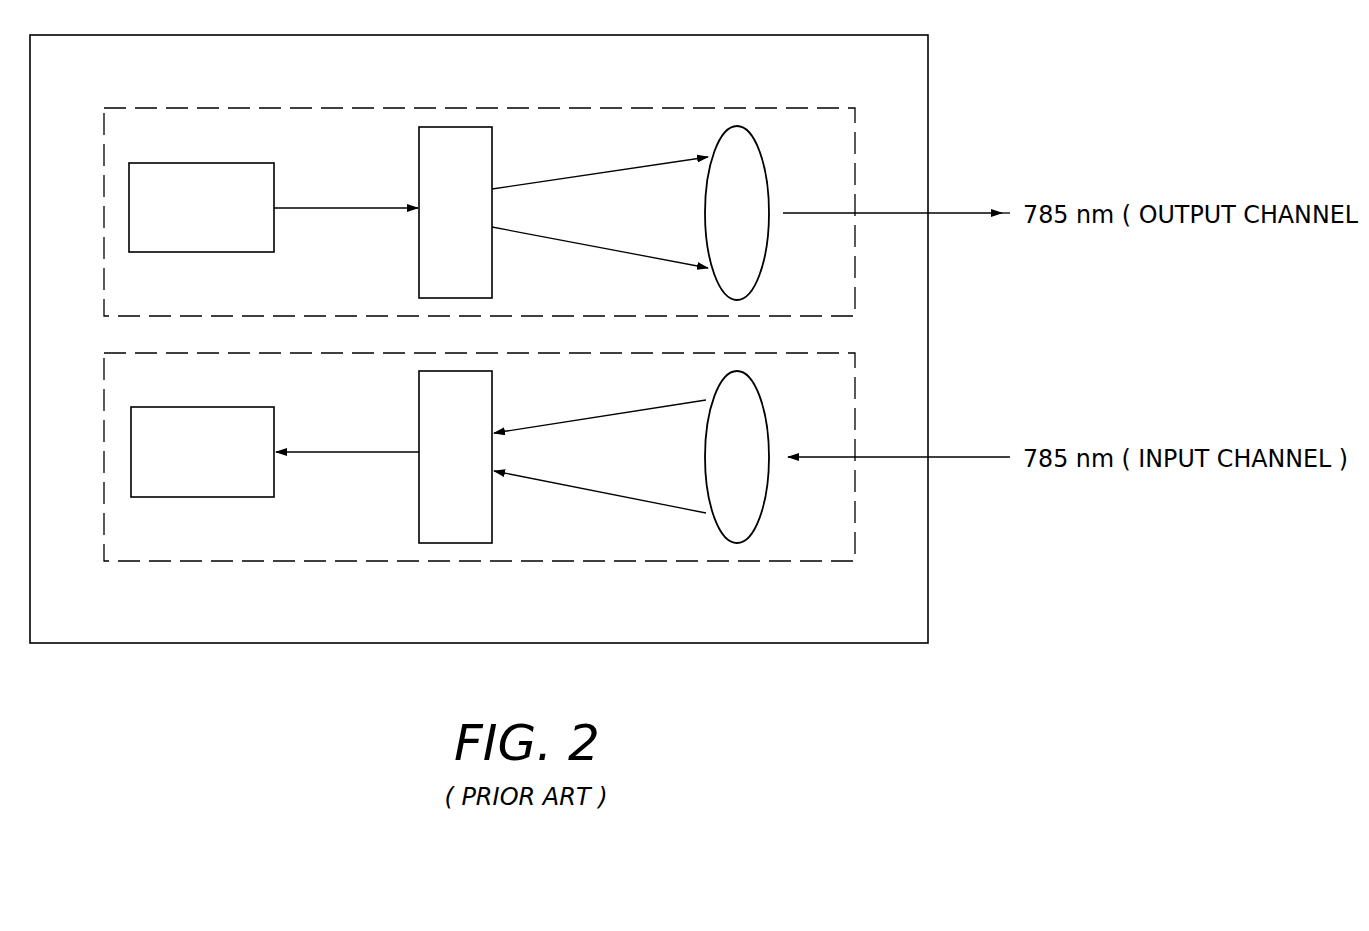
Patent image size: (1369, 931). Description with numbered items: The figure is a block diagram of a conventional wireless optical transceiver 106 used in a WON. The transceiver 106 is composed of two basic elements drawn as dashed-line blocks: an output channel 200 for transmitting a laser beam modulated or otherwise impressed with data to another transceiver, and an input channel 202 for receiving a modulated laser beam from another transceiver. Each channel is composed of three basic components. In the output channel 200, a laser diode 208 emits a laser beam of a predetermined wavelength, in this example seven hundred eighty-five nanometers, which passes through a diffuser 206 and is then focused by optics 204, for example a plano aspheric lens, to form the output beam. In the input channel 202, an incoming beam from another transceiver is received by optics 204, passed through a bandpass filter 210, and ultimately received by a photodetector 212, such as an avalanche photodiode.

The wireless optical transceiver 106 is at (118, 84).
The output channel 200 is at (800, 108).
The input channel 202 is at (800, 563).
The optics 204 is at (750, 172).
The diffuser 206 is at (481, 165).
The laser diode 208 is at (260, 190).
The bandpass filter 210 is at (481, 408).
The photodetector 212 is at (260, 435).